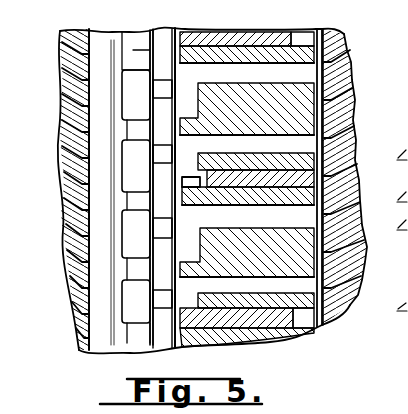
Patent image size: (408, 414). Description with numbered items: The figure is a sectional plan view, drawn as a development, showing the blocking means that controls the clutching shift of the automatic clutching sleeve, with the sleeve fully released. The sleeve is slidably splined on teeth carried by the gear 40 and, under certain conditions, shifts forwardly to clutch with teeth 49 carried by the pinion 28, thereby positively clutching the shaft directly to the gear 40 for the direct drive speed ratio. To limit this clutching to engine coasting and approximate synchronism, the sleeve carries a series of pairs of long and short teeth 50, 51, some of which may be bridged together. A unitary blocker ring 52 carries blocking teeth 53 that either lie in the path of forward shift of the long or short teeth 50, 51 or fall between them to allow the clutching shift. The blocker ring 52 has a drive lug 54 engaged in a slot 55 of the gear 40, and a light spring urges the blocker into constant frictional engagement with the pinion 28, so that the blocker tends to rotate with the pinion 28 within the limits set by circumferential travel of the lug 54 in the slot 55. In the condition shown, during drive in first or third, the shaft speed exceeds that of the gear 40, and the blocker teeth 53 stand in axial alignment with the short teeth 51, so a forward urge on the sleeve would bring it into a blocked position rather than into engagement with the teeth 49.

The pinion 28 is at (67, 161).
The gear 40 is at (340, 88).
The teeth 49 is at (133, 58).
The long teeth 50 is at (182, 123).
The short teeth 51 is at (200, 161).
The blocker ring 52 is at (167, 27).
The blocking teeth 53 is at (162, 88).
The drive lug 54 is at (208, 173).
The slot 55 is at (183, 153).